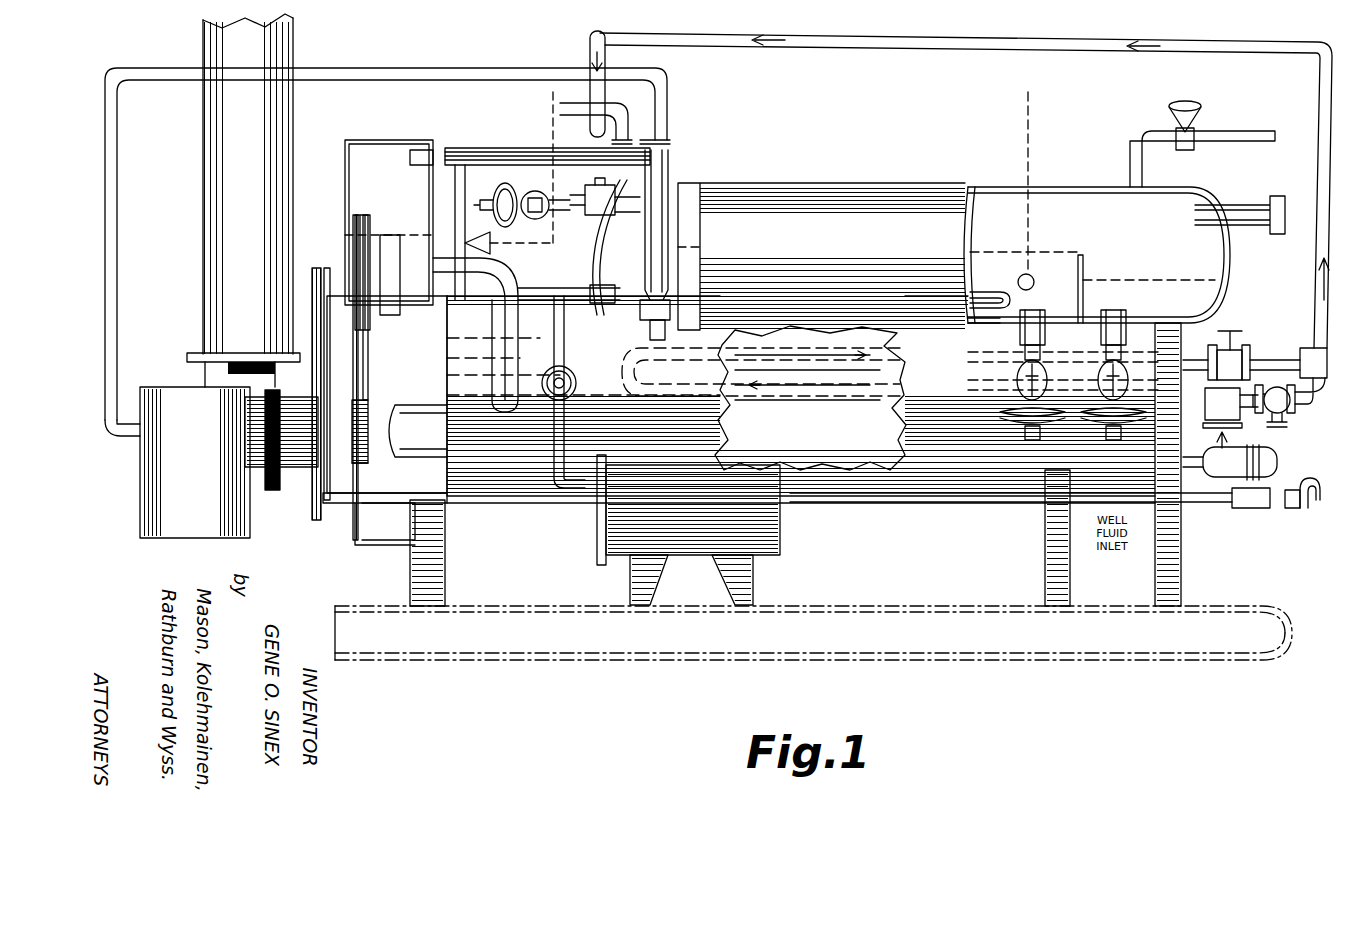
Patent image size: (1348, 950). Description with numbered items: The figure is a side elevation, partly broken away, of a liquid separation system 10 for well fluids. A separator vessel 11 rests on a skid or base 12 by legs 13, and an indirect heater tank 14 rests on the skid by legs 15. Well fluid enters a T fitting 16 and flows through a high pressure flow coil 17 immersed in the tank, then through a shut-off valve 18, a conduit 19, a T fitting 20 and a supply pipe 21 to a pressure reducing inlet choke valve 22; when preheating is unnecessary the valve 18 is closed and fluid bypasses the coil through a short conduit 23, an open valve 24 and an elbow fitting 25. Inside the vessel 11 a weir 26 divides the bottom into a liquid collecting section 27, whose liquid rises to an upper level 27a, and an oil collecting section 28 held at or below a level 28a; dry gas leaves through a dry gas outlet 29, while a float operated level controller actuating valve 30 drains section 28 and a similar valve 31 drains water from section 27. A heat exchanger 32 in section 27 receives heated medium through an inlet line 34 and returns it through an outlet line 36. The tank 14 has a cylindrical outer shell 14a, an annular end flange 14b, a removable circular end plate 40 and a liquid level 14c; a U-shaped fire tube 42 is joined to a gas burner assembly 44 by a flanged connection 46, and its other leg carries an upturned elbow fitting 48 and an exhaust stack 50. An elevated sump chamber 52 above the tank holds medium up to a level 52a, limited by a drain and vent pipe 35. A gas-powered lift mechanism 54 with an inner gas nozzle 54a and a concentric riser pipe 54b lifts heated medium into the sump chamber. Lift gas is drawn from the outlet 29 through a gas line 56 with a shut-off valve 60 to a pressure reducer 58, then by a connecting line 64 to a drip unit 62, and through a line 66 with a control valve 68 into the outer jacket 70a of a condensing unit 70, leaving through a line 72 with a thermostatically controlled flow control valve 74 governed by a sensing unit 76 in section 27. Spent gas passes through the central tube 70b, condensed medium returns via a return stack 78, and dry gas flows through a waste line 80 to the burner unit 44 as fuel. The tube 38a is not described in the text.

The liquid separation system 10 is at (736, 685).
The separator vessel 11 is at (838, 183).
The skid or base 12 is at (858, 606).
The legs 13 is at (445, 582).
The indirect heater tank 14 is at (876, 500).
The cylindrical outer shell 14a is at (402, 506).
The annular end flange 14b is at (317, 520).
The upper liquid level 14c is at (360, 322).
The legs 15 is at (1045, 584).
The T fitting 16 is at (1213, 402).
The high pressure flow coil 17 is at (802, 364).
The shut-off valve 18 is at (1235, 348).
The conduit 19 is at (1270, 360).
The T fitting 20 is at (1313, 348).
The supply pipe 21 is at (998, 40).
The pressure reducing inlet choke valve 22 is at (498, 196).
The short conduit 23 is at (1262, 408).
The valve 24 is at (1296, 414).
The elbow fitting 25 is at (1312, 410).
The weir 26 is at (1083, 268).
The liquid collecting section 27 is at (988, 252).
The upper level 27a is at (1040, 250).
The oil collecting section 28 is at (1170, 292).
The upper level 28a is at (1125, 280).
The dry gas outlet 29 is at (1270, 236).
The float operated level controller actuating valve 30 is at (1098, 378).
The float operated level controller actuating valve 31 is at (1017, 378).
The heat exchanger 32 is at (988, 324).
The inlet line 34 is at (500, 282).
The drain and vent pipe 35 is at (368, 218).
The outlet line 36 is at (630, 312).
The burner air tube 38a is at (442, 410).
The circular end plate 40 is at (310, 530).
The U-shaped fire tube 42 is at (440, 470).
The gas burner assembly 44 is at (140, 477).
The flanged connection 46 is at (272, 490).
The upturned elbow fitting 48 is at (200, 362).
The exhaust stack 50 is at (203, 318).
The sump chamber 52 is at (400, 140).
The level 52a is at (398, 232).
The gas-powered lift mechanism 54 is at (370, 462).
The gas nozzle 54a is at (368, 404).
The riser pipe 54b is at (370, 358).
The gas line 56 is at (1270, 142).
The pressure reducer 58 is at (1260, 500).
The shut-off valve 60 is at (1198, 128).
The drip unit 62 is at (780, 530).
The connecting line 64 is at (1218, 500).
The line 66 is at (628, 120).
The control valve 68 is at (578, 380).
The condensing unit 70 is at (492, 148).
The outer jacket 70a is at (503, 148).
The central tube 70b is at (520, 156).
The line 72 is at (390, 546).
The thermostatically controlled flow control valve 74 is at (460, 240).
The thermally responsive sensing unit 76 is at (1034, 278).
The return stack 78 is at (668, 174).
The waste line 80 is at (430, 72).